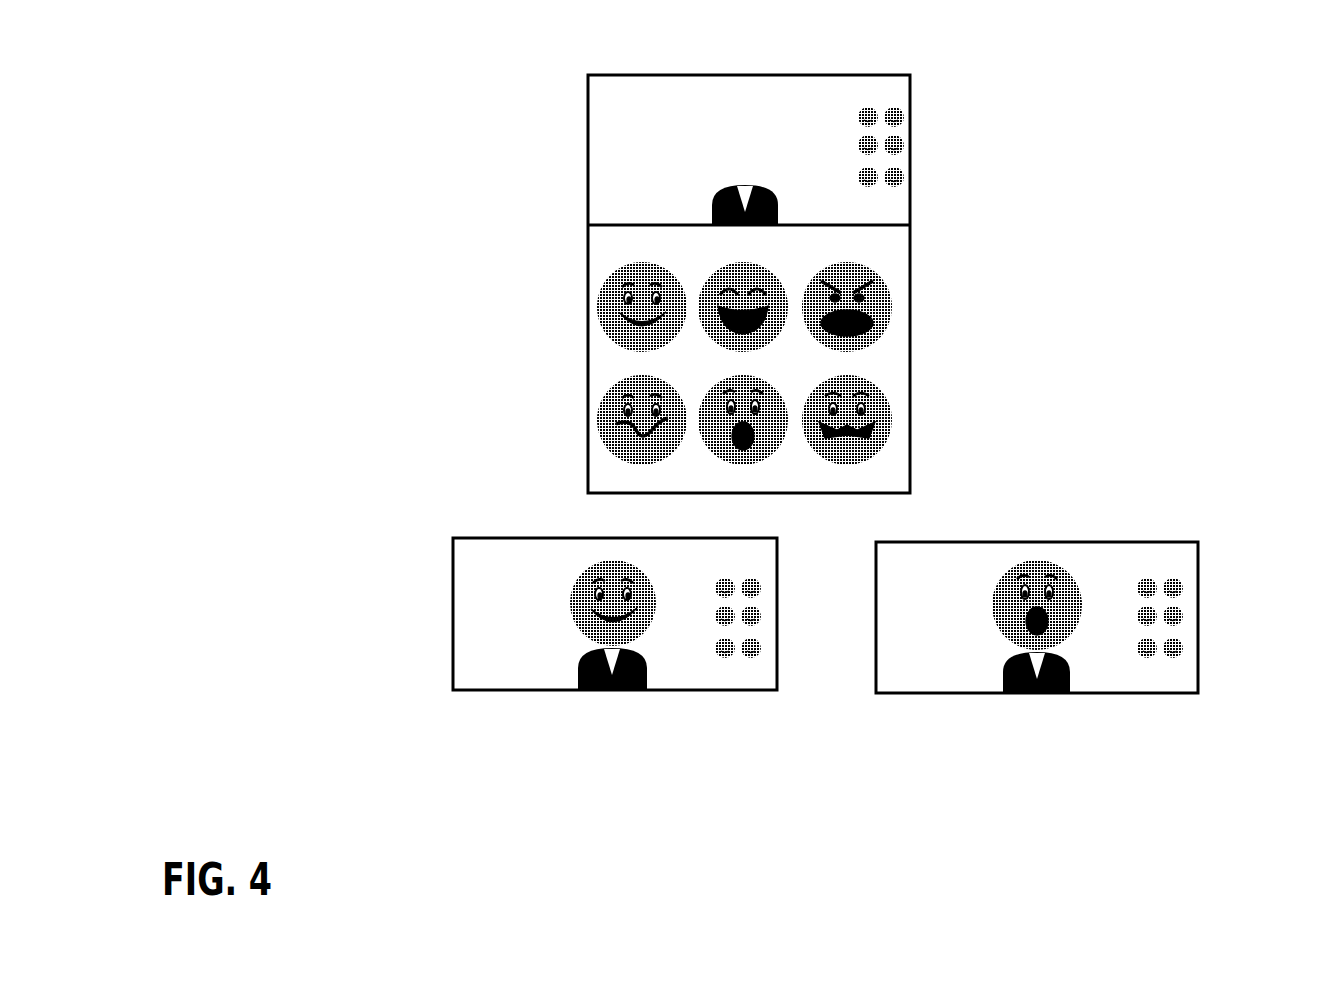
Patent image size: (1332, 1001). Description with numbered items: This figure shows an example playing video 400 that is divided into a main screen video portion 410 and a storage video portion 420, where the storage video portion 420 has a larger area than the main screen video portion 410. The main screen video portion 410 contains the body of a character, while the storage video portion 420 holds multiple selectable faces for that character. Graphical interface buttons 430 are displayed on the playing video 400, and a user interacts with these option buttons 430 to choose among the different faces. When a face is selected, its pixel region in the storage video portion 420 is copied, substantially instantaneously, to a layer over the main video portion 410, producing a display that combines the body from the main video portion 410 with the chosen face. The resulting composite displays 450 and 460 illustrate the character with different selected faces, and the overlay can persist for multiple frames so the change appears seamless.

The video 400 is at (542, 493).
The main screen video portion 410 is at (947, 75).
The storage video portion 420 is at (950, 493).
The graphical interface buttons 430 is at (905, 72).
The first video with emoticon 450 is at (477, 588).
The second video with emoticon 460 is at (1117, 570).